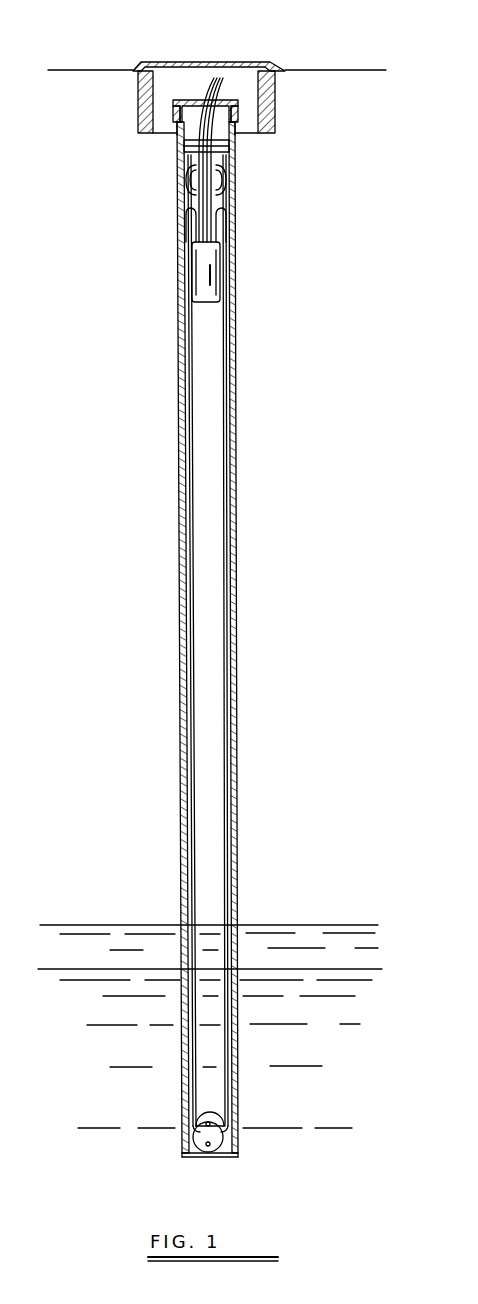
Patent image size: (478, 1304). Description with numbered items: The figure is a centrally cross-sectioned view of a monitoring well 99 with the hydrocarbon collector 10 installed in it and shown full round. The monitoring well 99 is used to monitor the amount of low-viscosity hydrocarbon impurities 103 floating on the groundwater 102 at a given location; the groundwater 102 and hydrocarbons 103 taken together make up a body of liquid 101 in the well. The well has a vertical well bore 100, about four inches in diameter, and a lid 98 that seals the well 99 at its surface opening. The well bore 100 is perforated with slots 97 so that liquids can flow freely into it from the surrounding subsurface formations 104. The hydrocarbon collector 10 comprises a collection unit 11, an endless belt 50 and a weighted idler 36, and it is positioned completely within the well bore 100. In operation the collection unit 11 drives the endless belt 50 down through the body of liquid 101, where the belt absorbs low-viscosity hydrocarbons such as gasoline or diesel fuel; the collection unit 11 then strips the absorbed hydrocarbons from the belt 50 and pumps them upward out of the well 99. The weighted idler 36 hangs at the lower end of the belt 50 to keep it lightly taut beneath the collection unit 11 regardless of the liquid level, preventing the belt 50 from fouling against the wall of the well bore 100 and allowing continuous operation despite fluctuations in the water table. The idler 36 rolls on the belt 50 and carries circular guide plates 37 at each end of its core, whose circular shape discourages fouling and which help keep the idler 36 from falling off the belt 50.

The hydrocarbon collector 10 is at (169, 231).
The collection unit 11 is at (200, 300).
The idler 36 is at (214, 1112).
The circular guide plates 37 is at (200, 1148).
The endless belt 50 is at (222, 446).
The slots 97 is at (237, 555).
The lid 98 is at (232, 62).
The monitoring well 99 is at (197, 62).
The well bore 100 is at (178, 491).
The body of liquid 101 is at (208, 920).
The groundwater 102 is at (268, 973).
The hydrocarbon impurities 103 is at (320, 930).
The subsurface formations 104 is at (318, 753).